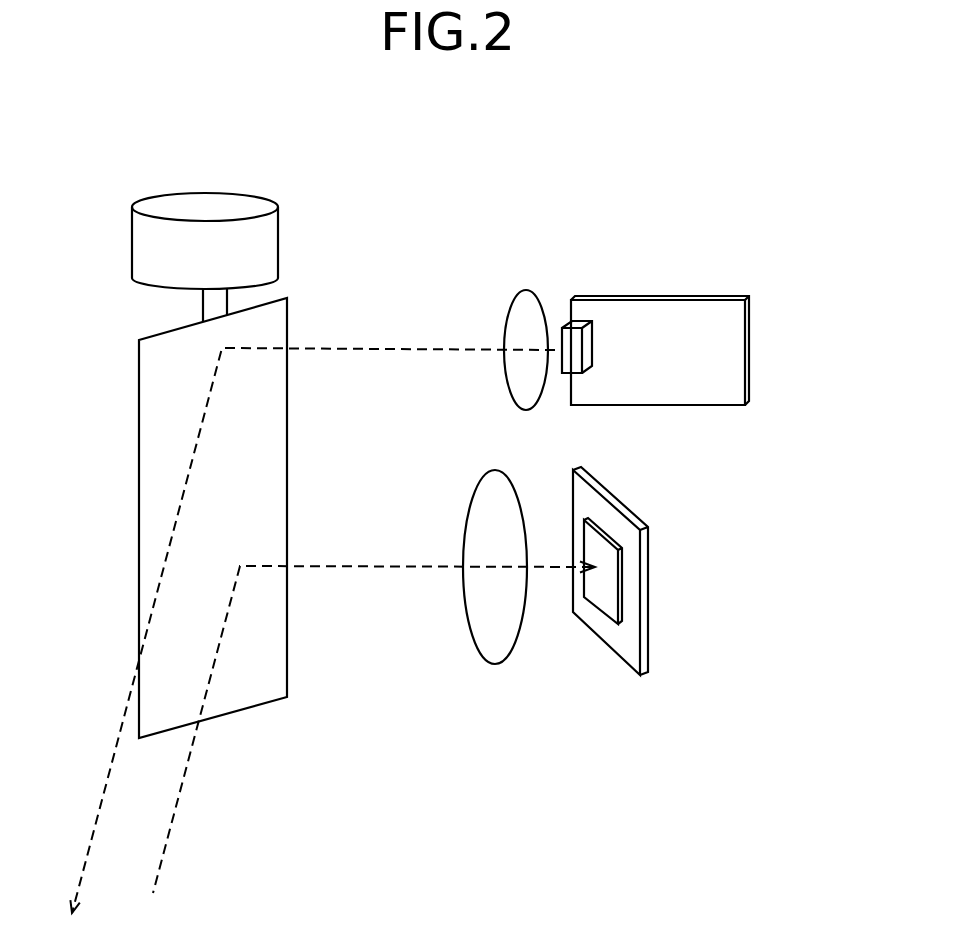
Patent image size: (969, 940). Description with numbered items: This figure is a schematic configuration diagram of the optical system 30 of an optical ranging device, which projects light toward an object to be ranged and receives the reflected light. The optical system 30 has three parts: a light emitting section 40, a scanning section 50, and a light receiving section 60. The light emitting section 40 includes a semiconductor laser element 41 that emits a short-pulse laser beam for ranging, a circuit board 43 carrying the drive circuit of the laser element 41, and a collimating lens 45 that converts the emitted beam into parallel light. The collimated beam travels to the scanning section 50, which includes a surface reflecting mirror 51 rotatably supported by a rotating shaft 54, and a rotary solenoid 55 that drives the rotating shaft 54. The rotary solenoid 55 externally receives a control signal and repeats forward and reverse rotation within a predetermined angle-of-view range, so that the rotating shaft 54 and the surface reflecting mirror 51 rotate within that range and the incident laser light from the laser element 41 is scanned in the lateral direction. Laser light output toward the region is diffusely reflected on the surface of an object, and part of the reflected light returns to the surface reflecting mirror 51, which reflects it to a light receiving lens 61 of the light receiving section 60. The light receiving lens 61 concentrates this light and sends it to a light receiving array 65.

The optical system 30 is at (575, 148).
The light emitting section 40 is at (668, 307).
The semiconductor laser element 41 is at (588, 343).
The circuit board 43 is at (695, 298).
The collimating lens 45 is at (525, 298).
The scanning section 50 is at (223, 537).
The surface reflecting mirror 51 is at (240, 687).
The rotating shaft 54 is at (208, 305).
The rotary solenoid 55 is at (262, 246).
The light receiving section 60 is at (555, 644).
The light receiving lens 61 is at (491, 647).
The light receiving array 65 is at (606, 602).